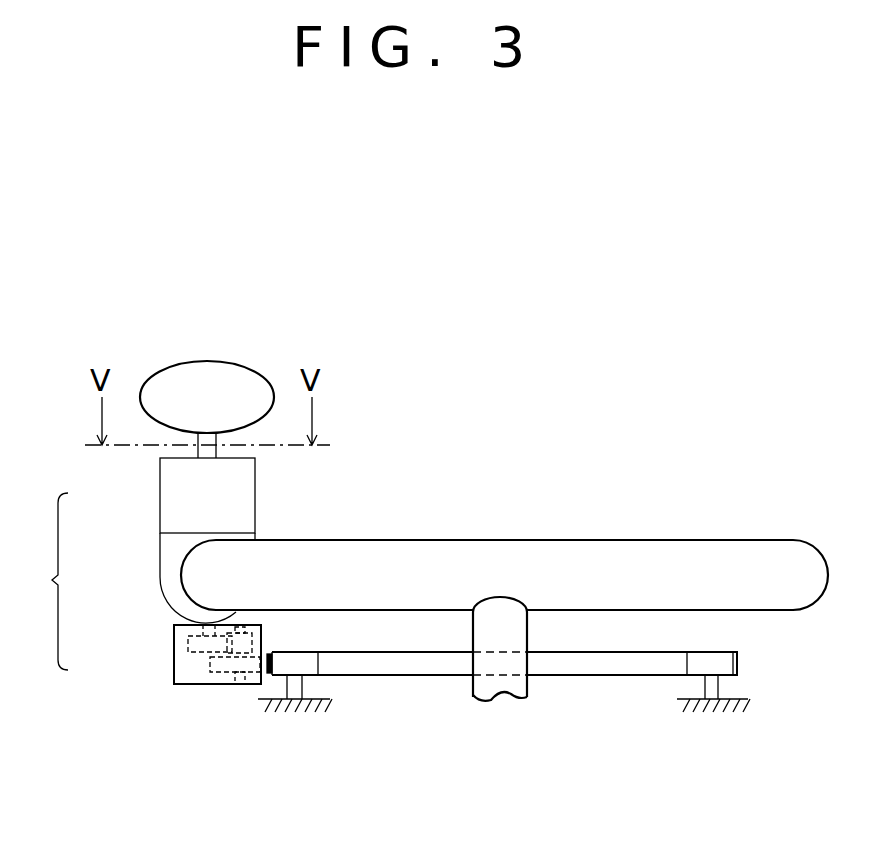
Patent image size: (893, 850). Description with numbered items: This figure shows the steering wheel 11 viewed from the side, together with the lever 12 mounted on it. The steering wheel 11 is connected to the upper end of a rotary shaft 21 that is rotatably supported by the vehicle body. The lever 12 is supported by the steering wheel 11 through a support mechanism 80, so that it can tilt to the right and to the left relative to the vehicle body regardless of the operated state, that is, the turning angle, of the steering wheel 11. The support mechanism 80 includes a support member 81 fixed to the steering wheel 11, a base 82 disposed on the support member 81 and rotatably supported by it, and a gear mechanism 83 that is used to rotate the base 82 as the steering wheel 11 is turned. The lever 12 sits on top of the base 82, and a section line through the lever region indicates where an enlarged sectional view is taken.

The steering wheel 11 is at (728, 550).
The lever 12 is at (231, 372).
The rotary shaft 21 is at (514, 637).
The support mechanism 80 is at (40, 581).
The support member 81 is at (150, 573).
The base 82 is at (150, 500).
The gear mechanism 83 is at (163, 661).